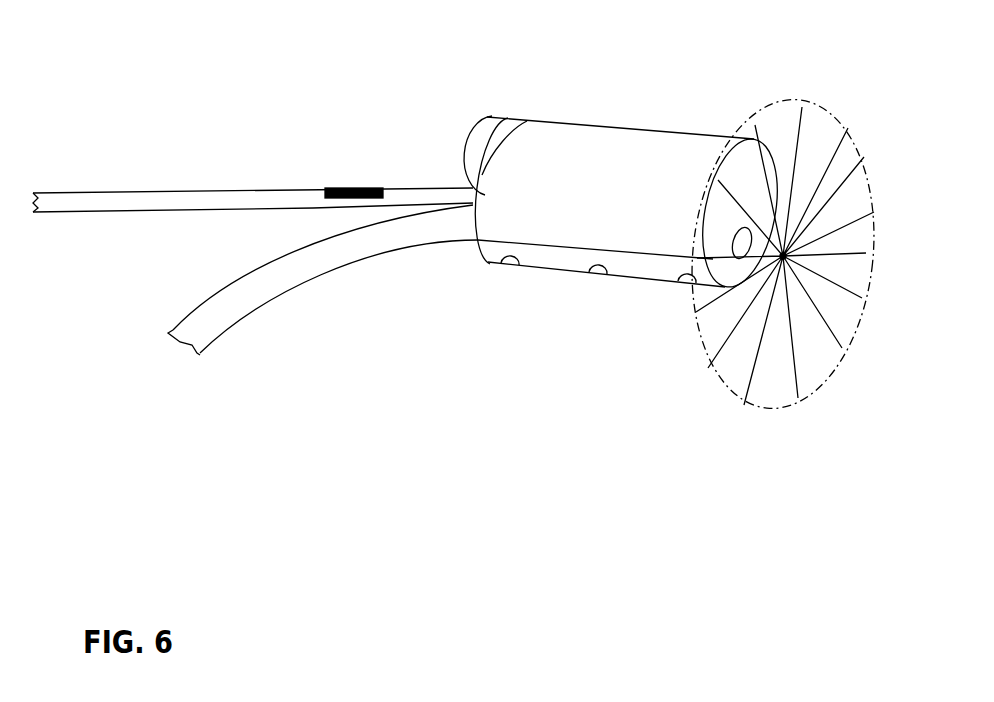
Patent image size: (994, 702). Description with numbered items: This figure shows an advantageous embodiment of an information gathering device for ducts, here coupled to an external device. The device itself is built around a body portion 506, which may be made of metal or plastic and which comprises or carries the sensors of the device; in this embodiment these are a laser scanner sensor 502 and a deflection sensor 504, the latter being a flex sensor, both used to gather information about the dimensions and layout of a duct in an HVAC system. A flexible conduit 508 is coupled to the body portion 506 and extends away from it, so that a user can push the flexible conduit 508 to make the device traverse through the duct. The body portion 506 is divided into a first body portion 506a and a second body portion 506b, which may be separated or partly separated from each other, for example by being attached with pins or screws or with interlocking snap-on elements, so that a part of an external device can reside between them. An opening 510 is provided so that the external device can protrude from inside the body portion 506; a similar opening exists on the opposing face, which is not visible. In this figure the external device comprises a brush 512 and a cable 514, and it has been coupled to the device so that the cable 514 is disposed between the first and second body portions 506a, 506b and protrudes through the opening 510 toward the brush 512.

The laser scanner sensor 502 is at (475, 120).
The deflection sensor 504 is at (360, 187).
The body portion 506 is at (631, 188).
The first body portion 506a is at (575, 135).
The second body portion 506b is at (548, 263).
The flexible conduit 508 is at (158, 192).
The opening 510 is at (735, 237).
The brush 512 is at (837, 365).
The cable 514 is at (345, 267).